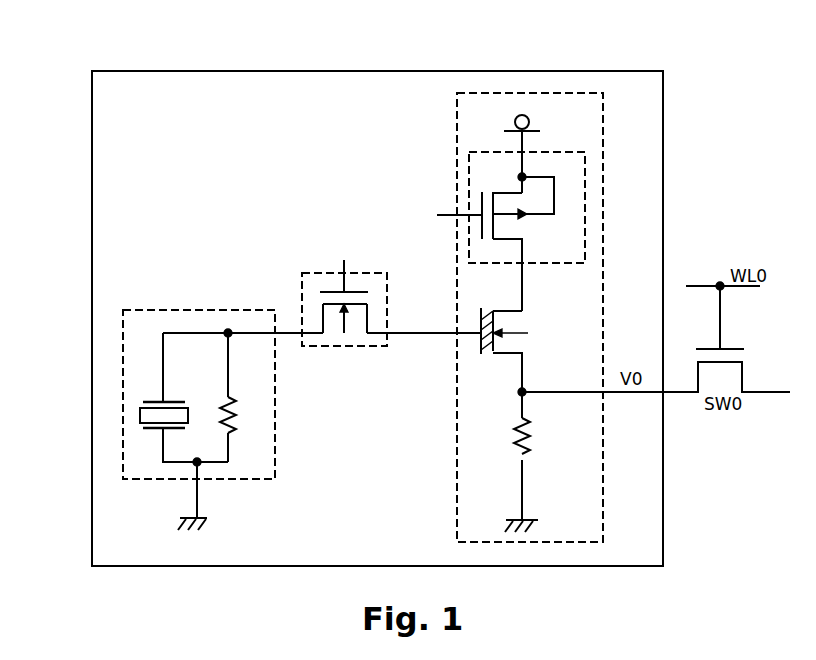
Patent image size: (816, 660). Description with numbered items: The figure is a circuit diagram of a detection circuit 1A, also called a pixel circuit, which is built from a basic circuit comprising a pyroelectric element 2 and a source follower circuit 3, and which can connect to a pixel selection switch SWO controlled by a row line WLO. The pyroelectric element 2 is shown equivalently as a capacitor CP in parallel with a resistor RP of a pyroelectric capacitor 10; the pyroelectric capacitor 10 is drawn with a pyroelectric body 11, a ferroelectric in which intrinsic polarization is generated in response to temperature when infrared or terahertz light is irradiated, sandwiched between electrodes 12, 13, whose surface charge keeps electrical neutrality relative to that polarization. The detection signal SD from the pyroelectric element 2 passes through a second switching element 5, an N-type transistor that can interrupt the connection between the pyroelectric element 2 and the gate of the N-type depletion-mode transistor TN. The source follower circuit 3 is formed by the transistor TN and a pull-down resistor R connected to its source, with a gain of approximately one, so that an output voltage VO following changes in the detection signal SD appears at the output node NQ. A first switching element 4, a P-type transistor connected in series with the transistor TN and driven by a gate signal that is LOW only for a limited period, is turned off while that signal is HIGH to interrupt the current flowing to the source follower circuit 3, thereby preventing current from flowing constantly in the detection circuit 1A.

The detection circuit 1A is at (250, 71).
The pyroelectric element 2 is at (163, 310).
The source follower circuit 3 is at (514, 317).
The first switching element 4 is at (548, 152).
The second switching element 5 is at (302, 290).
The pyroelectric capacitor 10 is at (95, 416).
The pyroelectric body 11 is at (140, 416).
The electrode 12 is at (140, 402).
The electrode 13 is at (145, 428).